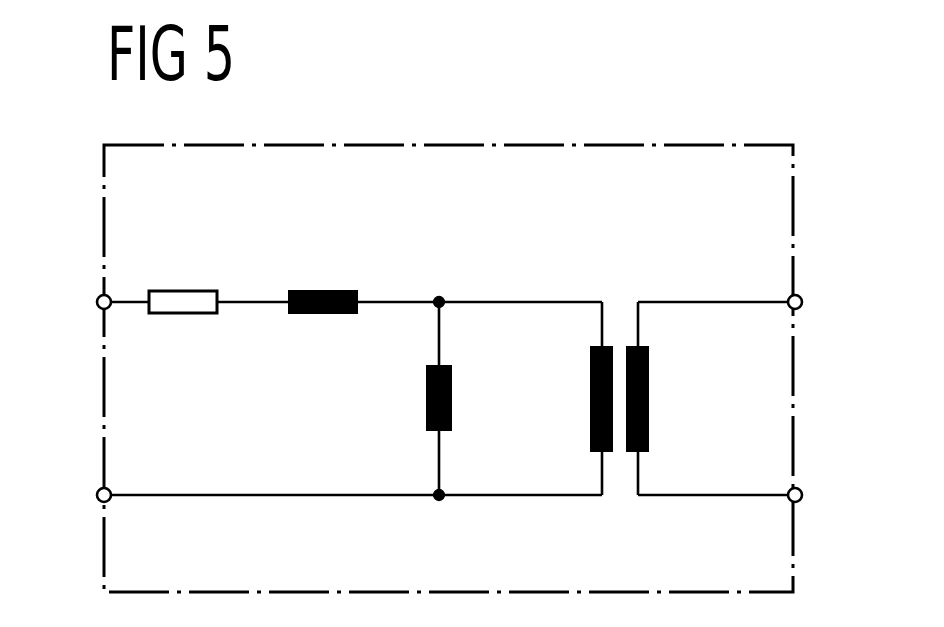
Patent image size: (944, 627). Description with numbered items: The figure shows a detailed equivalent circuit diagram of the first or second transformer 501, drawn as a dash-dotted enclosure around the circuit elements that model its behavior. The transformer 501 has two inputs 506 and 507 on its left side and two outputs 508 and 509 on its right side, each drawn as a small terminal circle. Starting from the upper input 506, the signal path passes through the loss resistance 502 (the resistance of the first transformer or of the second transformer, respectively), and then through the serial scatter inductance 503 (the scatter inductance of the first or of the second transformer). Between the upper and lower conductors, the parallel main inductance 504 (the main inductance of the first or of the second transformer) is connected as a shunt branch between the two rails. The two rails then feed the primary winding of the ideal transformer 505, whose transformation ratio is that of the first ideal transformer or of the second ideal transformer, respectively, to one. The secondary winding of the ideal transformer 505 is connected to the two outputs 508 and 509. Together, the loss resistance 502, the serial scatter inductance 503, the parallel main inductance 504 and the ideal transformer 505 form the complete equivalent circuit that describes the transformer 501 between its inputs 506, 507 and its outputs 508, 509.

The transformer 501 is at (556, 144).
The loss resistance 502 is at (183, 291).
The serial scatter inductance 503 is at (323, 291).
The parallel main inductance 504 is at (453, 372).
The ideal transformer 505 is at (590, 430).
The input 506 is at (100, 297).
The input 507 is at (100, 501).
The output 508 is at (800, 297).
The output 509 is at (800, 501).